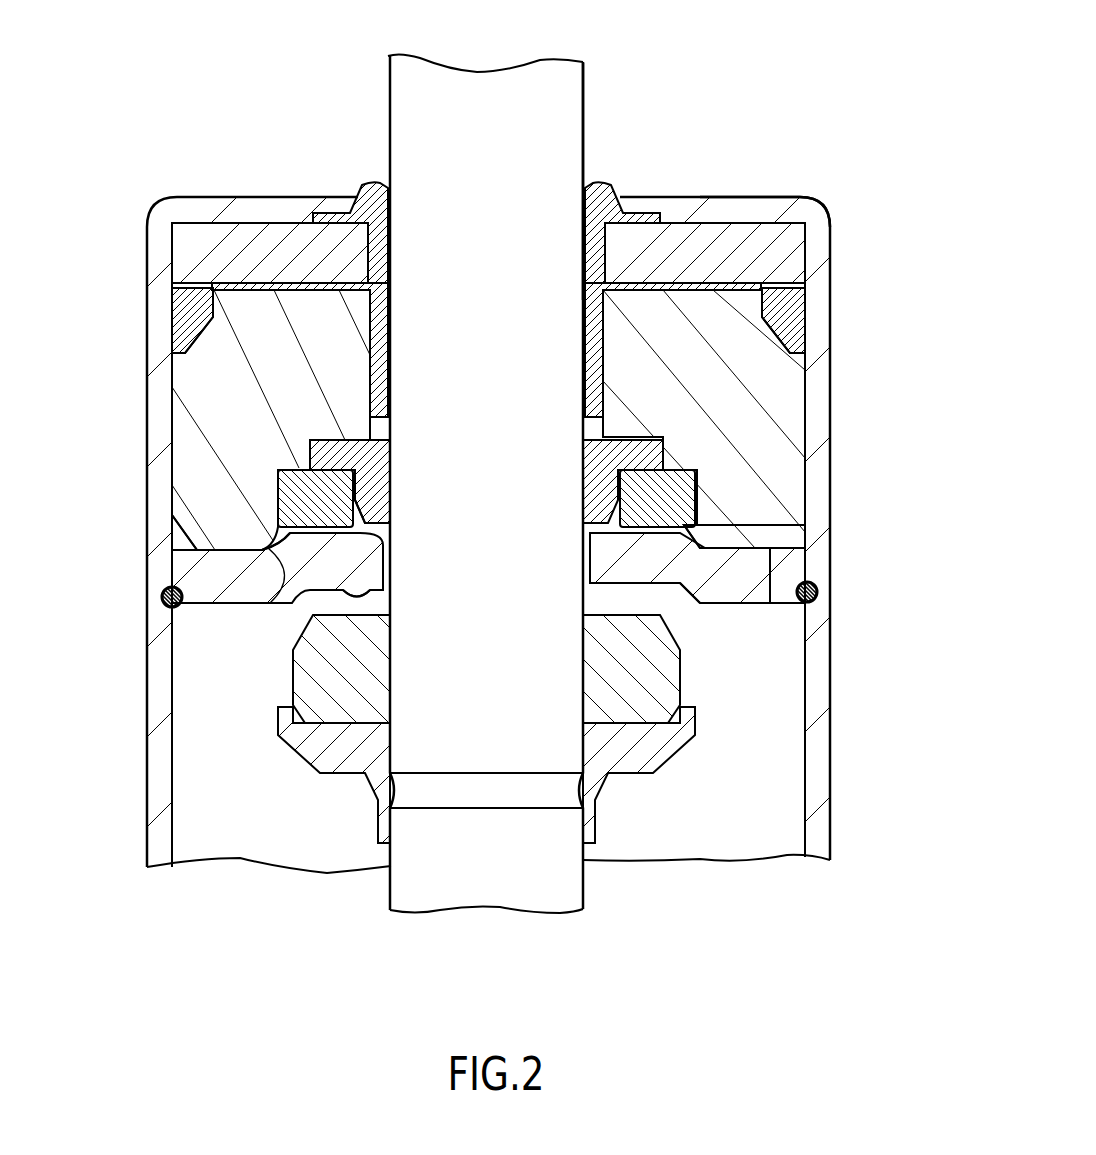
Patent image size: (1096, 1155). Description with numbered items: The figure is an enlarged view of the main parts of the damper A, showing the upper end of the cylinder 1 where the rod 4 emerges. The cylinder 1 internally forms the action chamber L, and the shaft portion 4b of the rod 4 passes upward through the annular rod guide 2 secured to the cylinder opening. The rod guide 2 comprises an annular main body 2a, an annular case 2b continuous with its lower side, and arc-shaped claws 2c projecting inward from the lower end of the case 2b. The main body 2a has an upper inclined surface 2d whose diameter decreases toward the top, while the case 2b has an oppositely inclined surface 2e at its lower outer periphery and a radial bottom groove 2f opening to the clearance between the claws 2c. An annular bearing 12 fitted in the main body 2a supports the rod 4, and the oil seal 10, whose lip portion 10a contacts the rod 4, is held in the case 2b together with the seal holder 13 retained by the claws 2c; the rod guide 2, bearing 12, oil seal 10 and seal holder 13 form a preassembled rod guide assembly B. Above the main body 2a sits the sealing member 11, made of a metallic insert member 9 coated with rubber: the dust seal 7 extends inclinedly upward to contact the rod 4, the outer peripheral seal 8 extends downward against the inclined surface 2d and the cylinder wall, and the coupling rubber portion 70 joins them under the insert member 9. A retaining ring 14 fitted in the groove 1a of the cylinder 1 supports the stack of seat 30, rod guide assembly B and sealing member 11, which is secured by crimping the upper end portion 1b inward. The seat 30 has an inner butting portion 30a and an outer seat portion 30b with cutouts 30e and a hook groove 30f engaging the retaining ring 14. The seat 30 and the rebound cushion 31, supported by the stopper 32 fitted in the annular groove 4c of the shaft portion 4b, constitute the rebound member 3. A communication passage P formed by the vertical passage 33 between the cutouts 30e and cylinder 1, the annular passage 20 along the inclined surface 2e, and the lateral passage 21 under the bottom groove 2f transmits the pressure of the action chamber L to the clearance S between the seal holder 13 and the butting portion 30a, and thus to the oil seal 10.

The cylinder 1 is at (822, 822).
The groove 1a is at (808, 604).
The upper end portion 1b is at (760, 200).
The rod guide 2 is at (166, 373).
The main body 2a is at (790, 372).
The case 2b is at (785, 470).
The claws 2c is at (283, 605).
The inclined surface 2d is at (212, 292).
The inclined surface 2e is at (185, 540).
The bottom groove 2f is at (797, 527).
The rebound member 3 is at (203, 720).
The rod 4 is at (385, 92).
The shaft portion 4b is at (570, 115).
The annular groove 4c is at (474, 790).
The dust seal 7 is at (622, 195).
The outer peripheral seal 8 is at (805, 315).
The insert member 9 is at (700, 235).
The oil seal 10 is at (330, 455).
The lip portion 10a is at (390, 497).
The sealing member 11 is at (286, 214).
The bearing 12 is at (383, 348).
The seal holder 13 is at (300, 492).
The retaining ring 14 is at (160, 597).
The annular passage 20 is at (797, 542).
The lateral passage 21 is at (725, 545).
The seat 30 is at (210, 612).
The butting portion 30a is at (380, 598).
The seat portion 30b is at (225, 602).
The cutouts 30e is at (790, 580).
The hook groove 30f is at (205, 604).
The rebound cushion 31 is at (303, 668).
The stopper 32 is at (332, 765).
The vertical passage 33 is at (812, 582).
The coupling rubber portion 70 is at (660, 295).
The damper A is at (822, 156).
The rod guide assembly B is at (166, 400).
The clearance S is at (605, 540).
The communication passage P is at (812, 566).
The action chamber L is at (726, 822).